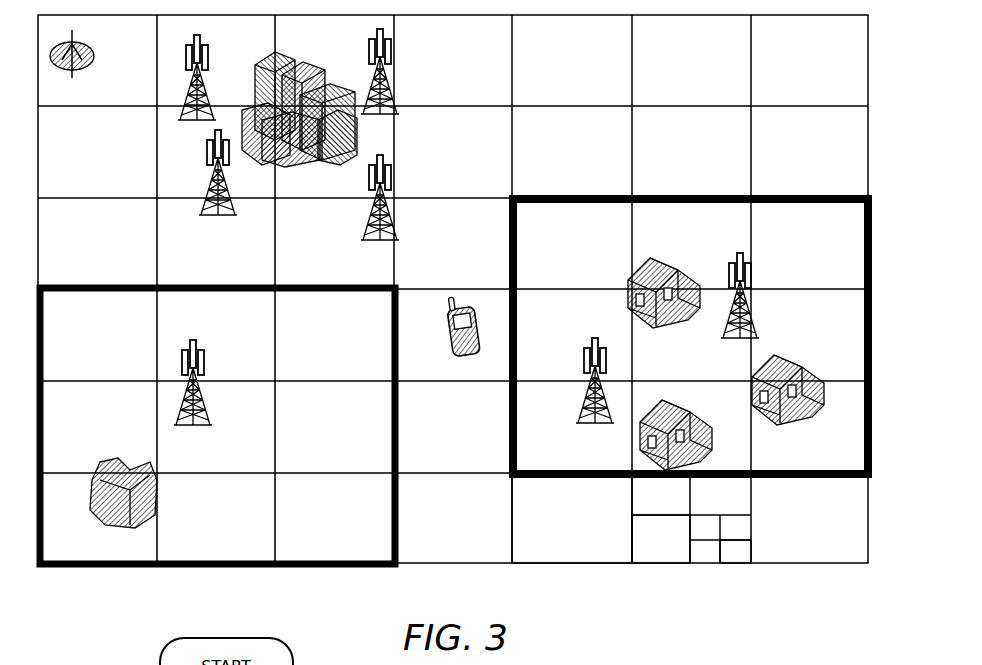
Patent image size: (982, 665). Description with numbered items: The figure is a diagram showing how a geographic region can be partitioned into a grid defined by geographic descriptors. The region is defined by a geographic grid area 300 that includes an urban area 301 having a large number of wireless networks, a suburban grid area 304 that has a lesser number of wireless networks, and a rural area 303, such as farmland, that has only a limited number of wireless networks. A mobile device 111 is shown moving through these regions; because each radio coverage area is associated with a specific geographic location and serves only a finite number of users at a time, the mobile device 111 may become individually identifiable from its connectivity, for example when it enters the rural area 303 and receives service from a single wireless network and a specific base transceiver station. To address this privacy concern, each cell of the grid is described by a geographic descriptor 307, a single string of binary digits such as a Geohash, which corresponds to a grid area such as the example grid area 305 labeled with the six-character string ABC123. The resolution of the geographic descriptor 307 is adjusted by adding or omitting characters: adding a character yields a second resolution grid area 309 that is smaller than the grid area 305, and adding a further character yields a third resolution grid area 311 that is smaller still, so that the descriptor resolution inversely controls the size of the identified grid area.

The geographic grid area 300 is at (770, 565).
The urban area 301 is at (418, 77).
The rural area 303 is at (195, 285).
The suburban grid area 304 is at (508, 422).
The mobile device 111 is at (455, 352).
The grid area 305 is at (533, 553).
The geographic descriptor 307 is at (562, 525).
The second resolution grid area 309 is at (652, 540).
The third resolution grid area 311 is at (733, 552).